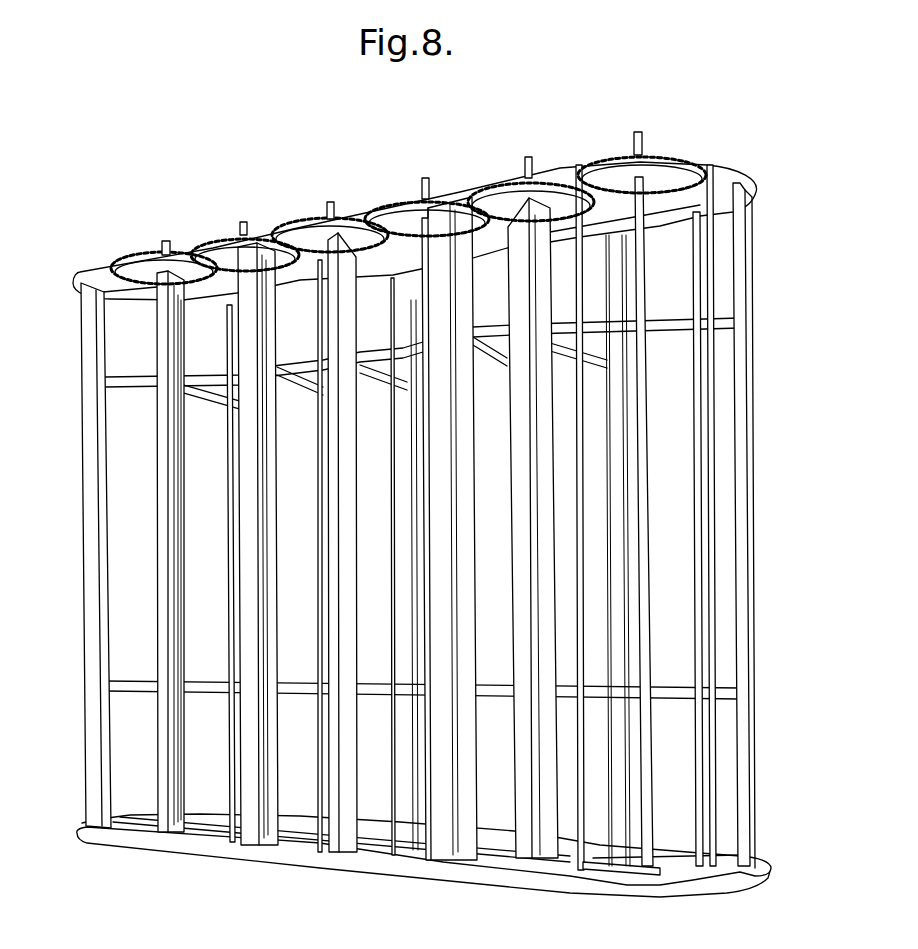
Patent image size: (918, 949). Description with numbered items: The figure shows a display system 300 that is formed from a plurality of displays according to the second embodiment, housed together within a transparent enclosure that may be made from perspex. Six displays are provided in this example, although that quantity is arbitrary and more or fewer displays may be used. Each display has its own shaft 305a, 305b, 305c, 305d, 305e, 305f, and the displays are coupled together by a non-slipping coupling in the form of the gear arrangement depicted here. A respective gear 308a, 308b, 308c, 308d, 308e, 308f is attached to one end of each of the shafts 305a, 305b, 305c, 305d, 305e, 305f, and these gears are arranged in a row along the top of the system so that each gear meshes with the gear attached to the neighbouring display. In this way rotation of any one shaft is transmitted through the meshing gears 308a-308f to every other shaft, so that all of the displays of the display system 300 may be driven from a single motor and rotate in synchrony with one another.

The display system 300 is at (770, 604).
The shaft 305a is at (163, 245).
The shaft 305b is at (243, 222).
The shaft 305c is at (332, 202).
The shaft 305d is at (425, 178).
The shaft 305e is at (530, 157).
The shaft 305f is at (637, 132).
The gear 308a is at (113, 265).
The gear 308b is at (207, 243).
The gear 308c is at (303, 228).
The gear 308d is at (387, 212).
The gear 308e is at (473, 187).
The gear 308f is at (683, 170).